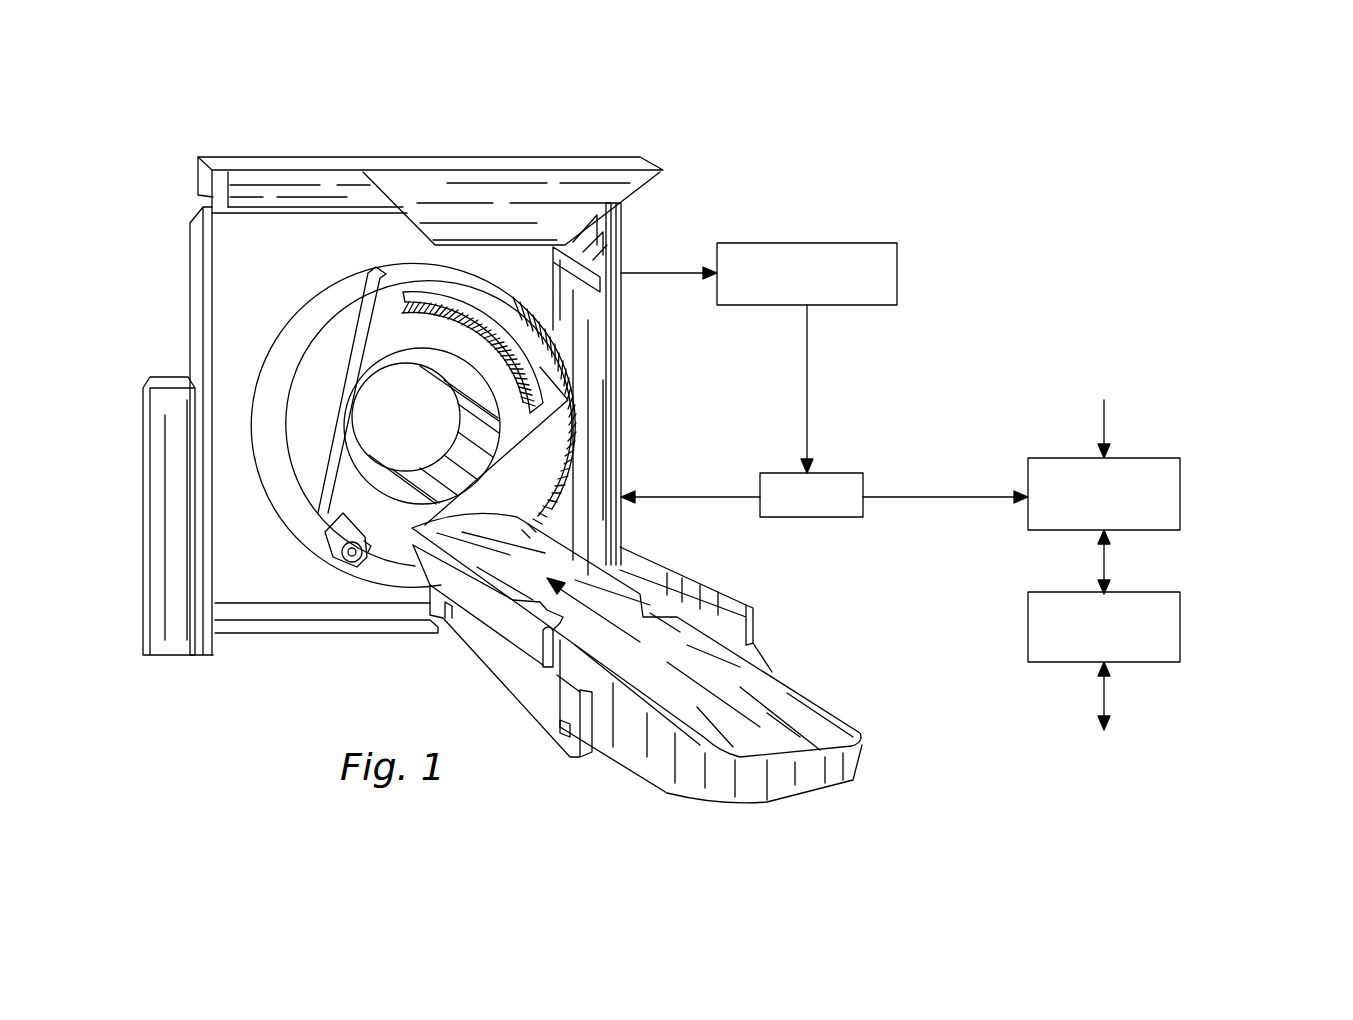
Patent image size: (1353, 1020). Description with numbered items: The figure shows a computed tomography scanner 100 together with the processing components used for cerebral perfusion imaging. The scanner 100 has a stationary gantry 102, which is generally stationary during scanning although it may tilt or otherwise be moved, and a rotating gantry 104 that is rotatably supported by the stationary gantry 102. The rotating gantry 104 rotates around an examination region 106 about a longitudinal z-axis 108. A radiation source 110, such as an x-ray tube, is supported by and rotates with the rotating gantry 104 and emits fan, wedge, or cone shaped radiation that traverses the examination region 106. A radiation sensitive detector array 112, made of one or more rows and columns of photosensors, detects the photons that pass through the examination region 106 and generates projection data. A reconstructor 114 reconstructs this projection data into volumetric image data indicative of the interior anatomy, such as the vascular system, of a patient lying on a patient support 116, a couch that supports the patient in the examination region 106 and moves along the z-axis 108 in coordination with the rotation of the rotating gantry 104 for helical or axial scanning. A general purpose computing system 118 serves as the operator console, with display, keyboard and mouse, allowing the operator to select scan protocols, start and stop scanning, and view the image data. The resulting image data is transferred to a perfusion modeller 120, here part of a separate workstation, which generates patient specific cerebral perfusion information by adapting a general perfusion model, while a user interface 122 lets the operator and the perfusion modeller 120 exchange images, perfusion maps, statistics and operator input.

The computed tomography scanner 100 is at (220, 120).
The stationary gantry 102 is at (207, 305).
The rotating gantry 104 is at (383, 320).
The examination region 106 is at (420, 421).
The z-axis 108 is at (617, 620).
The radiation source 110 is at (347, 563).
The radiation sensitive detector array 112 is at (540, 373).
The reconstructor 114 is at (898, 277).
The patient support 116 is at (808, 723).
The general purpose computing system 118 is at (864, 485).
The perfusion modeller 120 is at (1181, 495).
The user interface 122 is at (1181, 628).